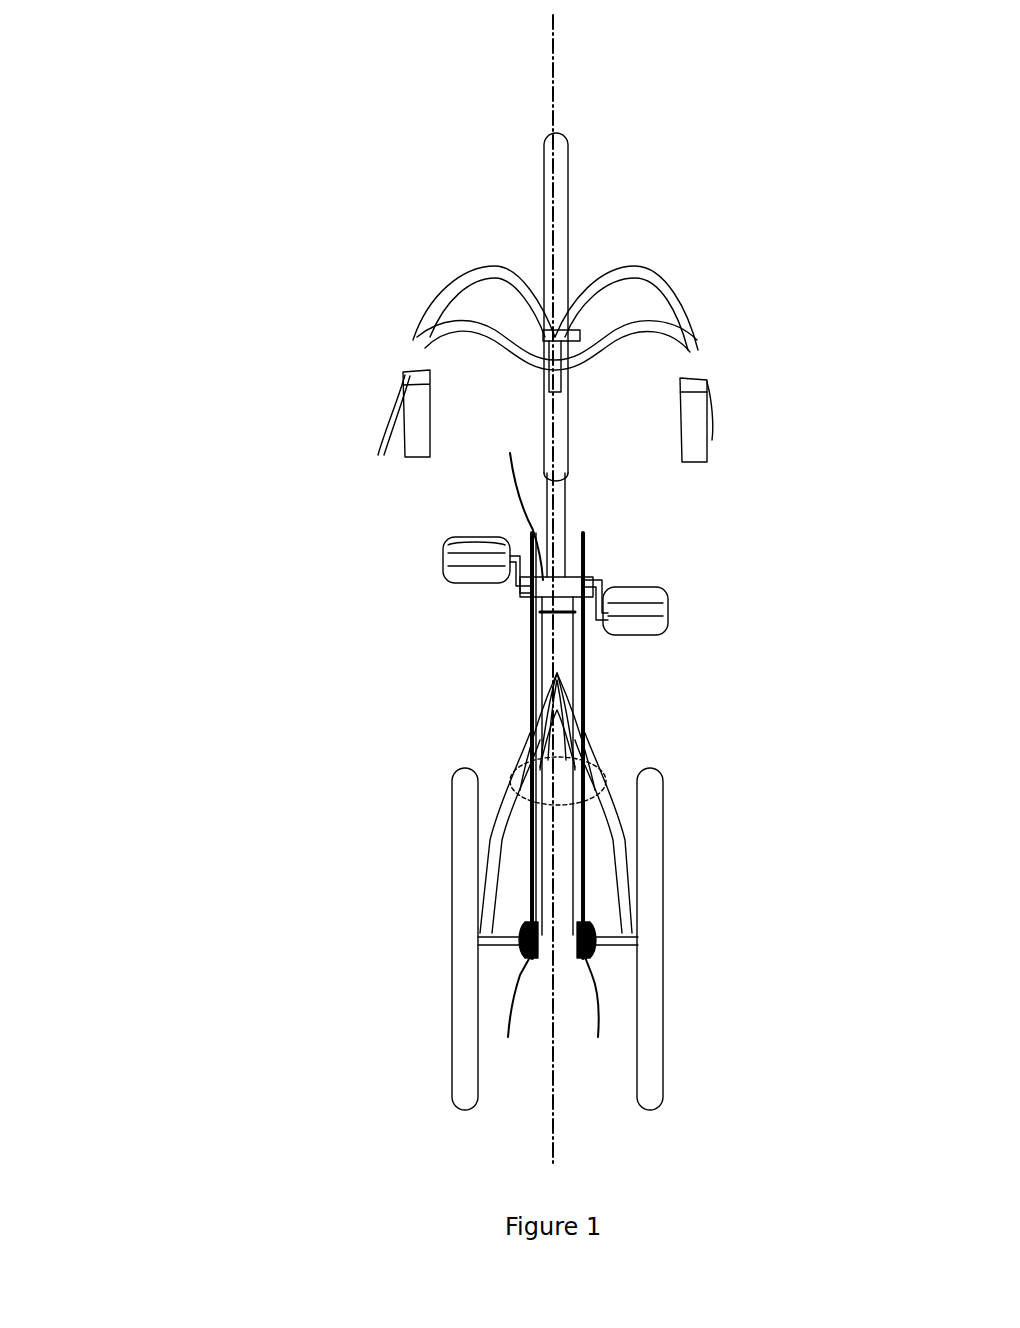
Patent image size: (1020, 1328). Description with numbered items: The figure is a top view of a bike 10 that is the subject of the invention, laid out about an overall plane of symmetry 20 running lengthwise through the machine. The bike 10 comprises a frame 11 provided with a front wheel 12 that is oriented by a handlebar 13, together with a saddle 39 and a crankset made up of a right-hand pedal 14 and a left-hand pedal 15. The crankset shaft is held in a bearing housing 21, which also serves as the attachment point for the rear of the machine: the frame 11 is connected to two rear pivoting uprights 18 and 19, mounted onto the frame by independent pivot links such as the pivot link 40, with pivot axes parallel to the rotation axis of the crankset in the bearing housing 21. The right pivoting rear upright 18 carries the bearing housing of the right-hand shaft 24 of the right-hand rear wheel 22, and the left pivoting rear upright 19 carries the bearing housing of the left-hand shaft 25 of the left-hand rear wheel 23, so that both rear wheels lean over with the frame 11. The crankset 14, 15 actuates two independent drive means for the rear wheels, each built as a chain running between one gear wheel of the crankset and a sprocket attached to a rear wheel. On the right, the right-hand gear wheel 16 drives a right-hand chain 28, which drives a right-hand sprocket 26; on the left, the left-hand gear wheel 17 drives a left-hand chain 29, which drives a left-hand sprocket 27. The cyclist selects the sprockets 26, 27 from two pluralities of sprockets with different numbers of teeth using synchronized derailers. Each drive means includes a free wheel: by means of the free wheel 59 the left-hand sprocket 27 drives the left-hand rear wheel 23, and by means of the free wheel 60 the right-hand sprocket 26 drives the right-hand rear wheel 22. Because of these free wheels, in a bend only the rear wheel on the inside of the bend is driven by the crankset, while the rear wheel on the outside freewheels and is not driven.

The bike 10 is at (435, 65).
The frame 11 is at (252, 500).
The front wheel 12 is at (558, 182).
The handlebar 13 is at (433, 337).
The right-hand pedal 14 is at (657, 608).
The left-hand pedal 15 is at (445, 547).
The right-hand gear wheel 16 is at (587, 565).
The left-hand gear wheel 17 is at (530, 538).
The pivoting rear upright 18 is at (605, 795).
The pivoting rear upright 19 is at (510, 803).
The plane of symmetry 20 is at (553, 68).
The bearing housing 21 is at (516, 500).
The rear wheel 22 is at (642, 1057).
The rear wheel 23 is at (455, 1053).
The right-hand shaft 24 is at (618, 938).
The left-hand shaft 25 is at (503, 937).
The right-hand sprocket 26 is at (597, 1020).
The left-hand sprocket 27 is at (513, 1020).
The right-hand chain 28 is at (585, 683).
The left-hand chain 29 is at (532, 683).
The saddle 39 is at (540, 767).
The pivot link 40 is at (538, 603).
The free wheel 59 is at (527, 933).
The free wheel 60 is at (583, 930).